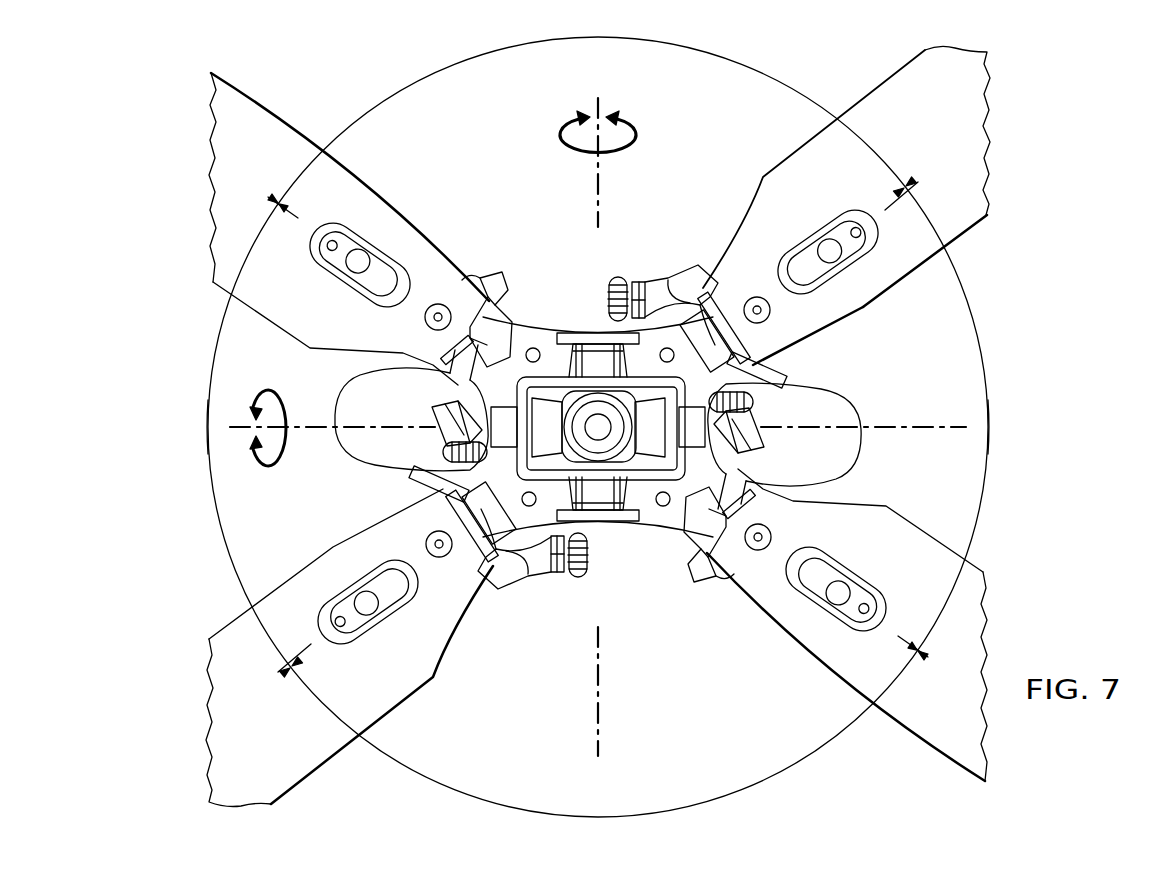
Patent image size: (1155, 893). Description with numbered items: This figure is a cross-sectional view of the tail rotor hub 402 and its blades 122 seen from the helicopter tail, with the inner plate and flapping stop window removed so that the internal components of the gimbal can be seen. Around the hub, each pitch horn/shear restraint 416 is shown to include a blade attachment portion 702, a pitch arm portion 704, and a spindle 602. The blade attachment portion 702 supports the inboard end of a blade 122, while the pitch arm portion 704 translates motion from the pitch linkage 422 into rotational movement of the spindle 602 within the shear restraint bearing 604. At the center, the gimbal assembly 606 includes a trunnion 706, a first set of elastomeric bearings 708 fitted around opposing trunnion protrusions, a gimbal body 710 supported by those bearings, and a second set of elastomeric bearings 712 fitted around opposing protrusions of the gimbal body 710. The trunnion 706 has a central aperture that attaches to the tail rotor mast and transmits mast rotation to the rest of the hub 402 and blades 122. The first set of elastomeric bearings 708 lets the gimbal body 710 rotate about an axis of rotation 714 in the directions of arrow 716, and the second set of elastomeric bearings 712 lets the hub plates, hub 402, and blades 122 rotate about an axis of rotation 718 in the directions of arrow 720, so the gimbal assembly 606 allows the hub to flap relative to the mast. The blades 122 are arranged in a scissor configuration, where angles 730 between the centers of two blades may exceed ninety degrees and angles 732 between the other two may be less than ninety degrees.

The blade 122 is at (272, 116).
The tail rotor hub 402 is at (845, 349).
The pitch horn/shear restraint 416 is at (681, 268).
The pitch linkage 422 is at (621, 276).
The spindle 602 is at (770, 314).
The shear restraint bearing 604 is at (512, 294).
The gimbal assembly 606 is at (641, 472).
The blade attachment portion 702 is at (780, 364).
The pitch arm portion 704 is at (708, 265).
The trunnion 706 is at (612, 388).
The first set of elastomeric bearings 708 is at (342, 427).
The gimbal body 710 is at (585, 472).
The second set of elastomeric bearings 712 is at (582, 360).
The axis of rotation 714 is at (335, 430).
The arrow 716 is at (266, 466).
The axis of rotation 718 is at (596, 193).
The arrow 720 is at (565, 137).
The angle 730 is at (596, 40).
The angle 732 is at (208, 420).